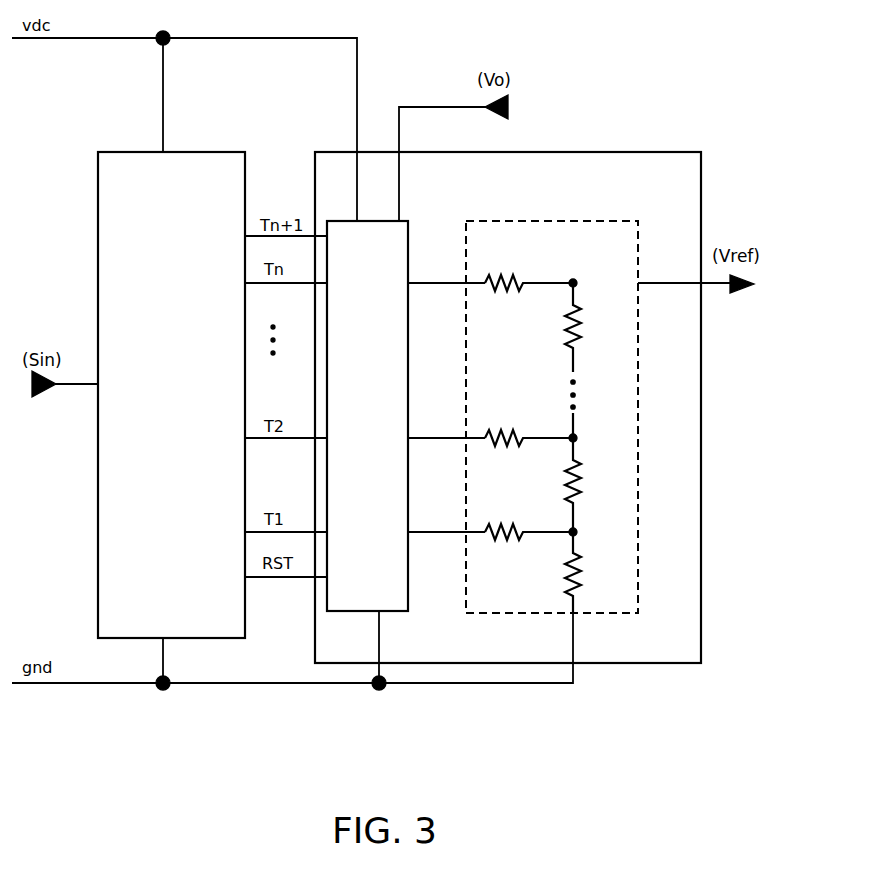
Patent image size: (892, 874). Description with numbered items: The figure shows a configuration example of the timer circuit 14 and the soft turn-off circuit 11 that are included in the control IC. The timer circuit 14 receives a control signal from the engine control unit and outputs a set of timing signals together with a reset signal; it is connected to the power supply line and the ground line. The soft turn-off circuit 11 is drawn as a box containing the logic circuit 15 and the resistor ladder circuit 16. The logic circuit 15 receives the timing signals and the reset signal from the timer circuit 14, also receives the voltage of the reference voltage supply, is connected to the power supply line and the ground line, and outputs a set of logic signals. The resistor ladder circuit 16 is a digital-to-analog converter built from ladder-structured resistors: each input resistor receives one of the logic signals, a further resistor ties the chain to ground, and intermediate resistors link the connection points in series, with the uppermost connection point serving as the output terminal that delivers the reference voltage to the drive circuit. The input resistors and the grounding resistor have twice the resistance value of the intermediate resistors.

The soft turn-off circuit 11 is at (514, 152).
The timer circuit 14 is at (190, 152).
The logic circuit 15 is at (408, 221).
The resistor ladder circuit 16 is at (548, 221).